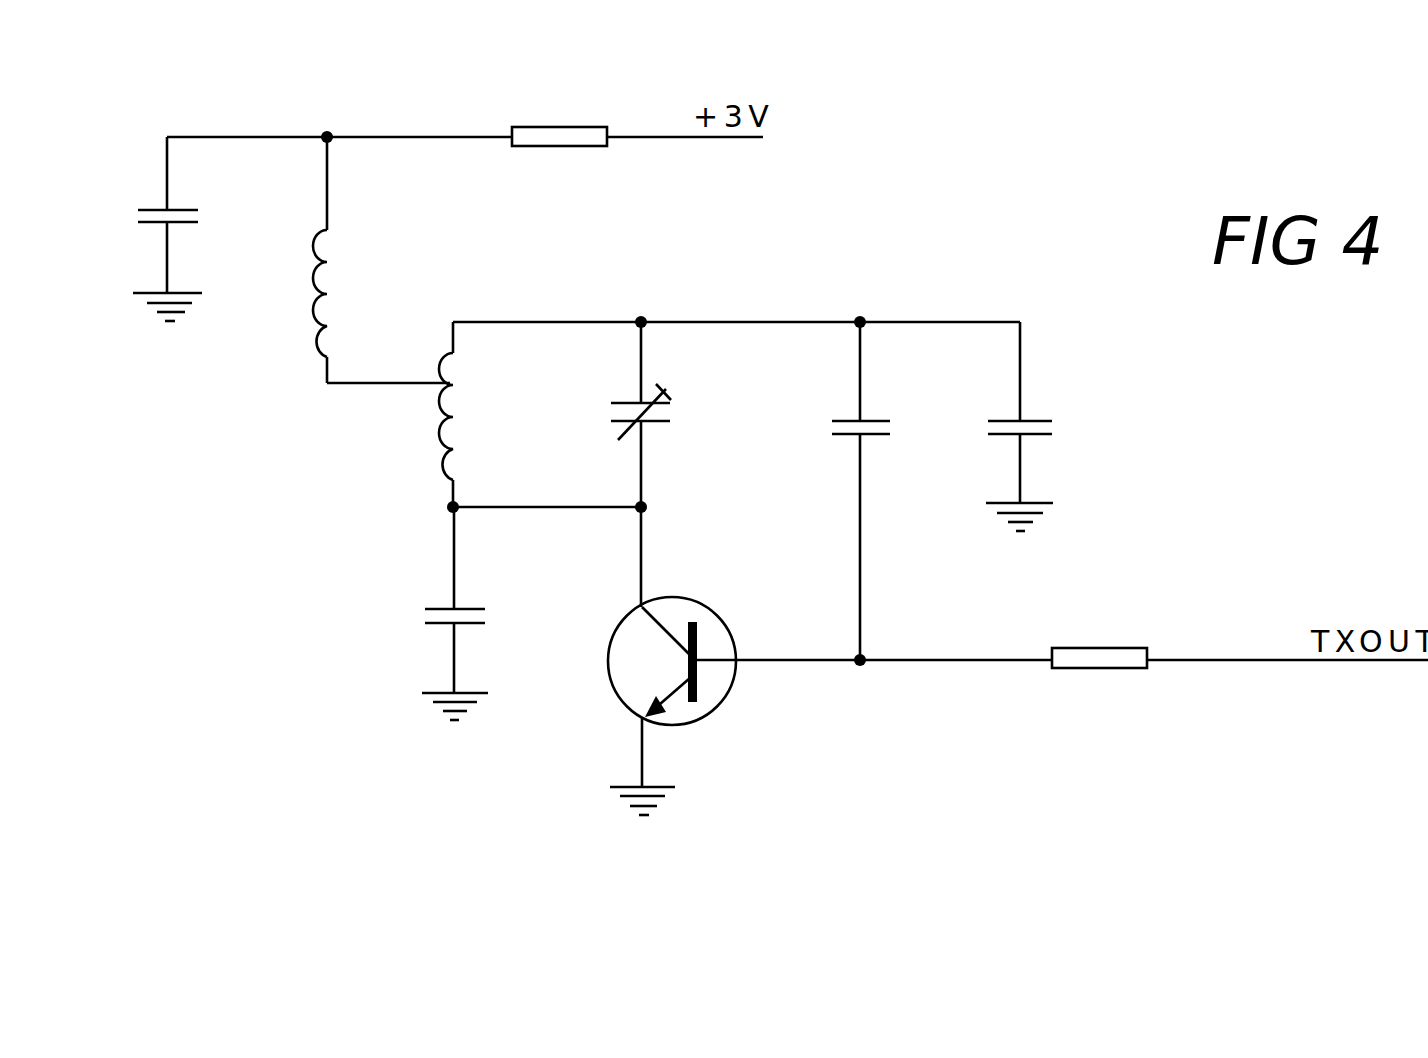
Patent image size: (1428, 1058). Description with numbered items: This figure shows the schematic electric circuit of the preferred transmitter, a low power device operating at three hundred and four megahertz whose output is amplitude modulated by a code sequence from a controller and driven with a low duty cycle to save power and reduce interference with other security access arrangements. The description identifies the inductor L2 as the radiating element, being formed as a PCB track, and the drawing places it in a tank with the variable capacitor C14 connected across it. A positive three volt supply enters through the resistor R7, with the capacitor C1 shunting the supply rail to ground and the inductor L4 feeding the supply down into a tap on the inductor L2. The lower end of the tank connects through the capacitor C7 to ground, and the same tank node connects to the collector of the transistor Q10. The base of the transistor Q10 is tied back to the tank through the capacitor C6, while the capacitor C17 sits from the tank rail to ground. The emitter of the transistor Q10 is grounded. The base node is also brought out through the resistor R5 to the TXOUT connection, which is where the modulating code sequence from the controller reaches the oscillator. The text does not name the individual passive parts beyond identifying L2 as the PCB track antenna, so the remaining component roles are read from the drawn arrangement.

The capacitor C1 (1n) supply decoupling C1 is at (139, 229).
The inductor L4 (22u) RF choke L4 is at (381, 260).
The resistor R7 (100R) supply R7 is at (562, 94).
The PCB track inductor L2 is at (408, 414).
The variable capacitor C14 (10p) tank trimmer C14 is at (595, 414).
The capacitor C6 (3p3) feedback C6 is at (816, 491).
The capacitor C17 (5p6) C17 is at (1066, 426).
The capacitor C7 (5p6) C7 is at (405, 613).
The transistor Q10 (2N3563) oscillator Q10 is at (749, 661).
The resistor R5 (10k) output to TXOUT R5 is at (1240, 616).